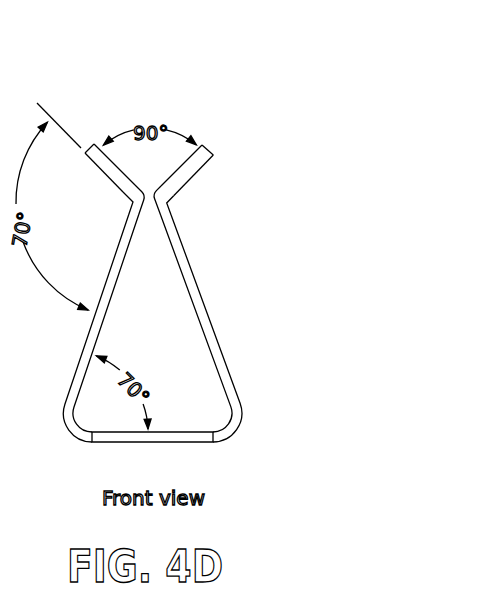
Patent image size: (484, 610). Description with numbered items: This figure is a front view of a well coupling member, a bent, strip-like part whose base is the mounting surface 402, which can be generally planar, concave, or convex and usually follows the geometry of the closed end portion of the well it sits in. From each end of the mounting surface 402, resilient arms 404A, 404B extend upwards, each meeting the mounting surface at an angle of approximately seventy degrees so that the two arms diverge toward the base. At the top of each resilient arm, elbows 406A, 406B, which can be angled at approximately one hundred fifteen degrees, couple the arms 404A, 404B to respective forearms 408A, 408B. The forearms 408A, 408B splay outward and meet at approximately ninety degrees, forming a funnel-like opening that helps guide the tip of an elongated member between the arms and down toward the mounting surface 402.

The mounting surface 402 is at (212, 442).
The resilient arm 404A is at (91, 327).
The resilient arm 404B is at (211, 332).
The elbow 406A is at (132, 202).
The elbow 406B is at (165, 203).
The forearm 408A is at (108, 162).
The forearm 408B is at (190, 163).